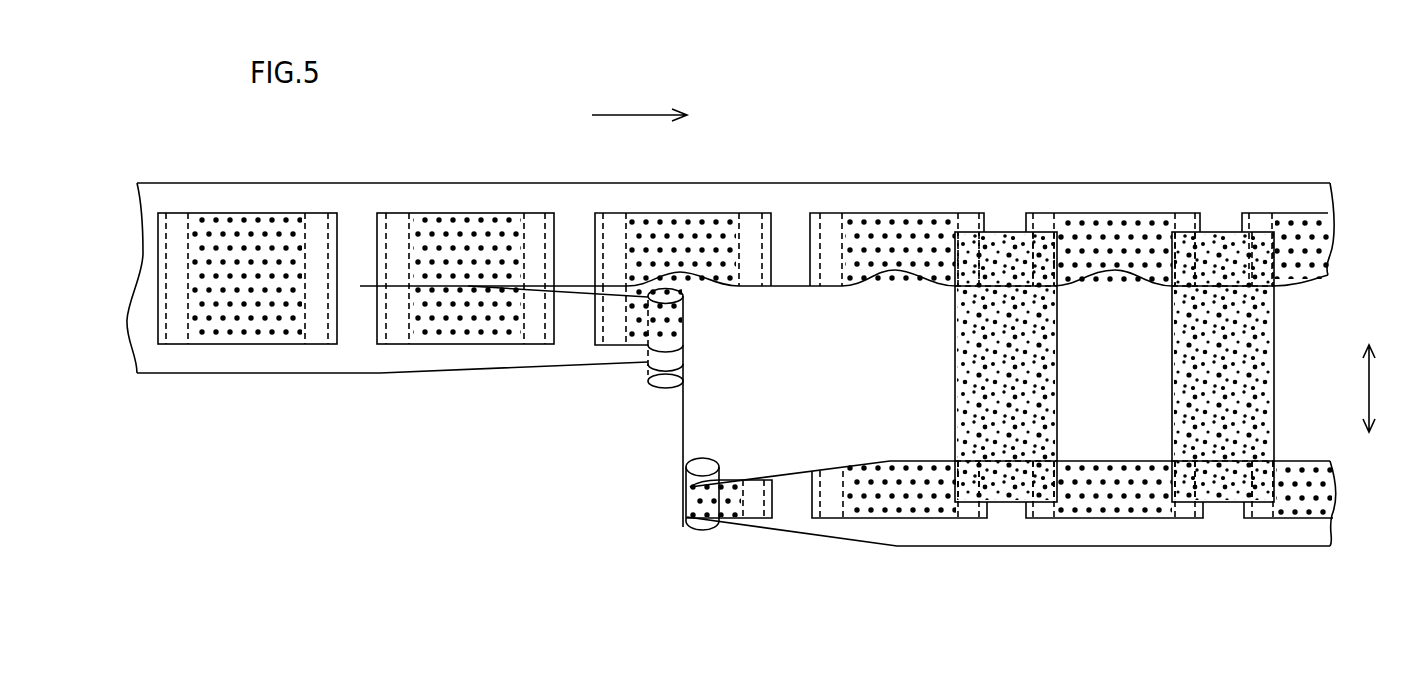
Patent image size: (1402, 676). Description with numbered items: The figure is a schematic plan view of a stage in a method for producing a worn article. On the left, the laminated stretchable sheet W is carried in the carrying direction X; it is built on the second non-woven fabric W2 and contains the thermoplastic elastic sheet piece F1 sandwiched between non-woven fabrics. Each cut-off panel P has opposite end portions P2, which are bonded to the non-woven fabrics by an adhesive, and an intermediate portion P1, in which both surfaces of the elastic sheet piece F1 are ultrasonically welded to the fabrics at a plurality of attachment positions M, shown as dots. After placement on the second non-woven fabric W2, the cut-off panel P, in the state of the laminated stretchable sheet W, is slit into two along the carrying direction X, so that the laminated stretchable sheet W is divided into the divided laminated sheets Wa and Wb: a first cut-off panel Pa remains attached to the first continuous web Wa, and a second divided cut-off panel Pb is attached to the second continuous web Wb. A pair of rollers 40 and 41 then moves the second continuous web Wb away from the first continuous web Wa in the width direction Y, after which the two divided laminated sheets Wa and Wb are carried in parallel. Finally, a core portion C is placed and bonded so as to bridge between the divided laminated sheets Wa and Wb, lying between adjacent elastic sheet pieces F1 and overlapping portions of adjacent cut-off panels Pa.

The laminated stretchable sheet W is at (702, 363).
The second non-woven fabric W2 is at (143, 350).
The first continuous web Wa is at (550, 195).
The second continuous web Wb is at (540, 363).
The cut-off panel P is at (356, 268).
The intermediate portion P1 is at (240, 216).
The opposite end portions P2 is at (177, 216).
The first cut-off panel Pa is at (460, 216).
The second divided cut-off panel Pb is at (468, 338).
The attachment positions M is at (273, 333).
The roller 40 is at (663, 383).
The roller 41 is at (703, 468).
The thermoplastic elastic sheet piece F1 is at (890, 272).
The core portion C is at (968, 362).
The carrying direction X is at (633, 113).
The width direction Y is at (1369, 390).